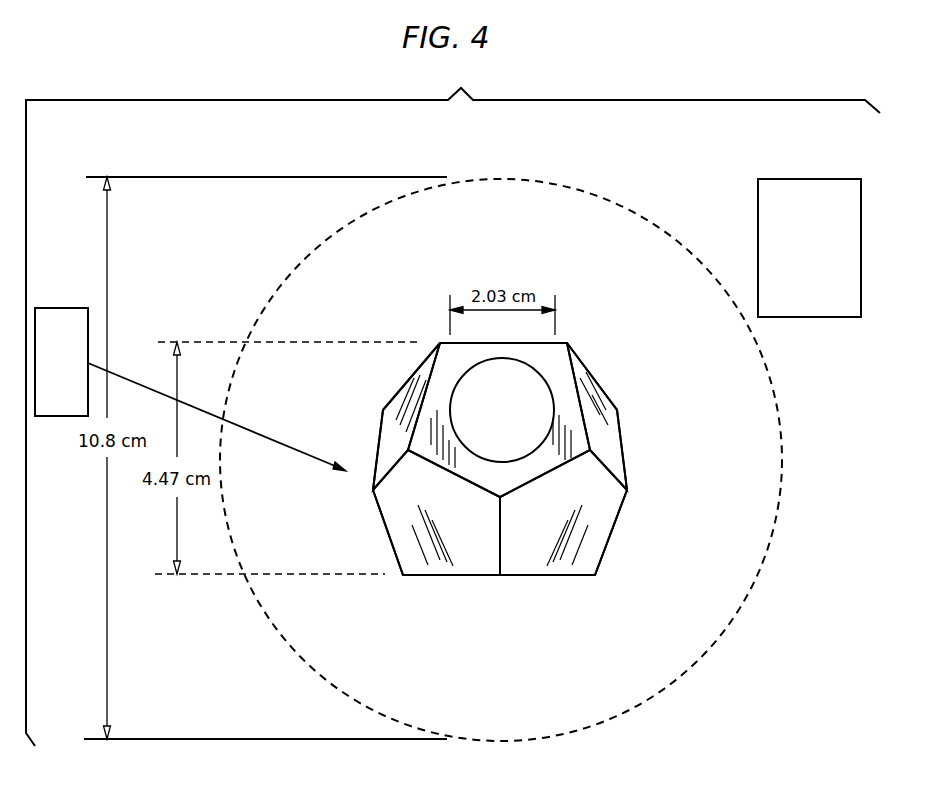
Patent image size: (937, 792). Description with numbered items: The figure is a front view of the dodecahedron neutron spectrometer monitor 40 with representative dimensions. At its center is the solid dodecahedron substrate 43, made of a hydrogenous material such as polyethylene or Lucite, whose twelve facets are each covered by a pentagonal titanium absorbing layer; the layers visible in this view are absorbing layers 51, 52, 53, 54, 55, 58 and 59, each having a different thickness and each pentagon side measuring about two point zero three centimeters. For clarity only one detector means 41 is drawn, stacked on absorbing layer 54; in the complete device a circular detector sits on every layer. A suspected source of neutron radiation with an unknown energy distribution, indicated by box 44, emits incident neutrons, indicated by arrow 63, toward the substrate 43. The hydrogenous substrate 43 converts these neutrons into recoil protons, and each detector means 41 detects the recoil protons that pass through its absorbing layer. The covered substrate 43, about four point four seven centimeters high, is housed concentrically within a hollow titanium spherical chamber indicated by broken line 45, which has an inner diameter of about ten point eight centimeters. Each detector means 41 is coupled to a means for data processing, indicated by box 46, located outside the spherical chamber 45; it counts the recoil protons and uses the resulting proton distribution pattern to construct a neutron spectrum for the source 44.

The dodecahedron neutron spectrometer monitor 40 is at (838, 427).
The detector means 41 is at (465, 372).
The substrate 43 is at (428, 575).
The unknown energy distribution 44 is at (72, 300).
The hollow spherical chamber 45 is at (683, 677).
The data processing means 46 is at (814, 172).
The absorbing layer 51 is at (530, 338).
The absorbing layer 52 is at (525, 588).
The absorbing layer 53 is at (390, 386).
The absorbing layer 54 is at (547, 358).
The absorbing layer 55 is at (603, 392).
The absorbing layer 58 is at (395, 527).
The absorbing layer 59 is at (600, 520).
The incident neutrons 63 is at (134, 380).